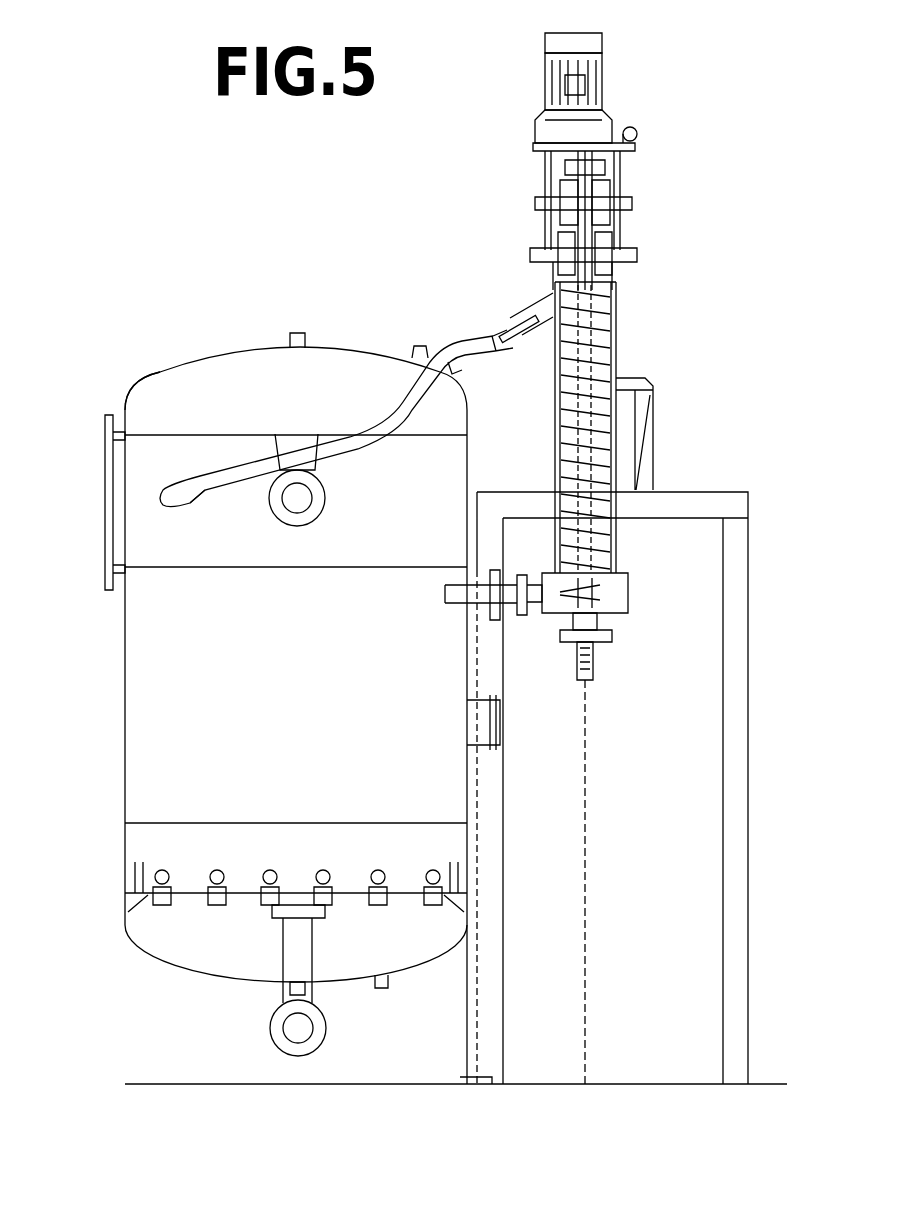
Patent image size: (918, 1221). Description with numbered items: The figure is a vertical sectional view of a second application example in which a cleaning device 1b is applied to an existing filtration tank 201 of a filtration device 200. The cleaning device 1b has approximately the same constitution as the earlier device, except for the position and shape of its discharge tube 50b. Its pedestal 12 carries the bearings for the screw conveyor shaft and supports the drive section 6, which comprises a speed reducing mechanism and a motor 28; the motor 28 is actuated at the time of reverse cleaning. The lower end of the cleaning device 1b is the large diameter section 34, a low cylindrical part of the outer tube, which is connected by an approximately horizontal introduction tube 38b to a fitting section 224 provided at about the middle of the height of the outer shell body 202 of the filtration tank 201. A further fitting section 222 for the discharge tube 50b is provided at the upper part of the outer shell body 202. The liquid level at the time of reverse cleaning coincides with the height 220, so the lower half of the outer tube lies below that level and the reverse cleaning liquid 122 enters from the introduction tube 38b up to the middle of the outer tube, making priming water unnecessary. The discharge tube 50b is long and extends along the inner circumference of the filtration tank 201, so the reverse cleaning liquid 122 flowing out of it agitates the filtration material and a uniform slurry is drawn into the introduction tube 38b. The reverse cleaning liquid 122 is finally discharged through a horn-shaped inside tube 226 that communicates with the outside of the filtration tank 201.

The filtration device 200 is at (203, 282).
The filtration tank 201 is at (268, 348).
The outer shell body 202 is at (135, 395).
The liquid level 220 is at (160, 412).
The horn-shaped inside tube 226 is at (278, 451).
The reverse cleaning liquid 122 is at (185, 555).
The fitting section 222 is at (425, 365).
The fitting section 224 is at (485, 580).
The cleaning device 1b is at (700, 142).
The motor 28 is at (612, 80).
The drive section 6 is at (527, 113).
The pedestal 12 is at (622, 178).
The discharge tube 50b is at (518, 302).
The large diameter section 34 is at (628, 598).
The introduction tube 38b is at (532, 605).